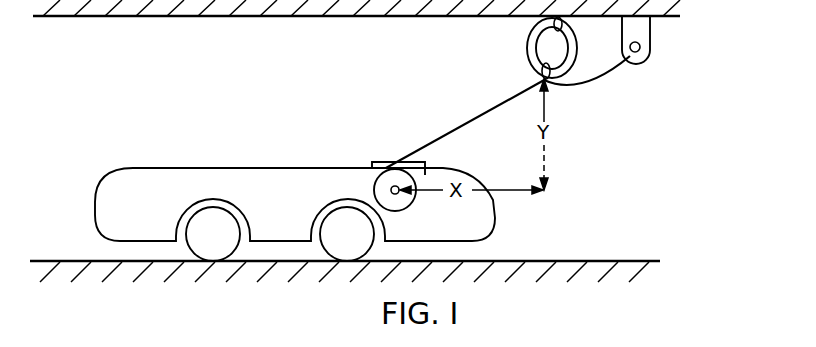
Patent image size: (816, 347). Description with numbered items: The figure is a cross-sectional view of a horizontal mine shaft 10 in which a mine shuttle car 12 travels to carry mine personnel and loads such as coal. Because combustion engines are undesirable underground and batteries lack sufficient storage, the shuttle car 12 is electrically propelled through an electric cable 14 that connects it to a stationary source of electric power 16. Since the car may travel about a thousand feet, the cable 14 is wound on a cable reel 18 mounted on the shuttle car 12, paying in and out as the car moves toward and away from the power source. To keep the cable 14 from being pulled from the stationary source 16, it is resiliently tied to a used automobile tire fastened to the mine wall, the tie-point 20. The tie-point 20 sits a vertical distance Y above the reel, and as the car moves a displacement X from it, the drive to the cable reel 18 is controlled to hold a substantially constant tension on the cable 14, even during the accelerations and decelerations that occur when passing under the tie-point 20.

The horizontal mine shaft 10 is at (213, 17).
The mine shuttle car 12 is at (140, 188).
The electric cable 14 is at (465, 120).
The stationary source of electric power 16 is at (646, 58).
The cable reel 18 is at (373, 190).
The tie-point 20 is at (539, 79).